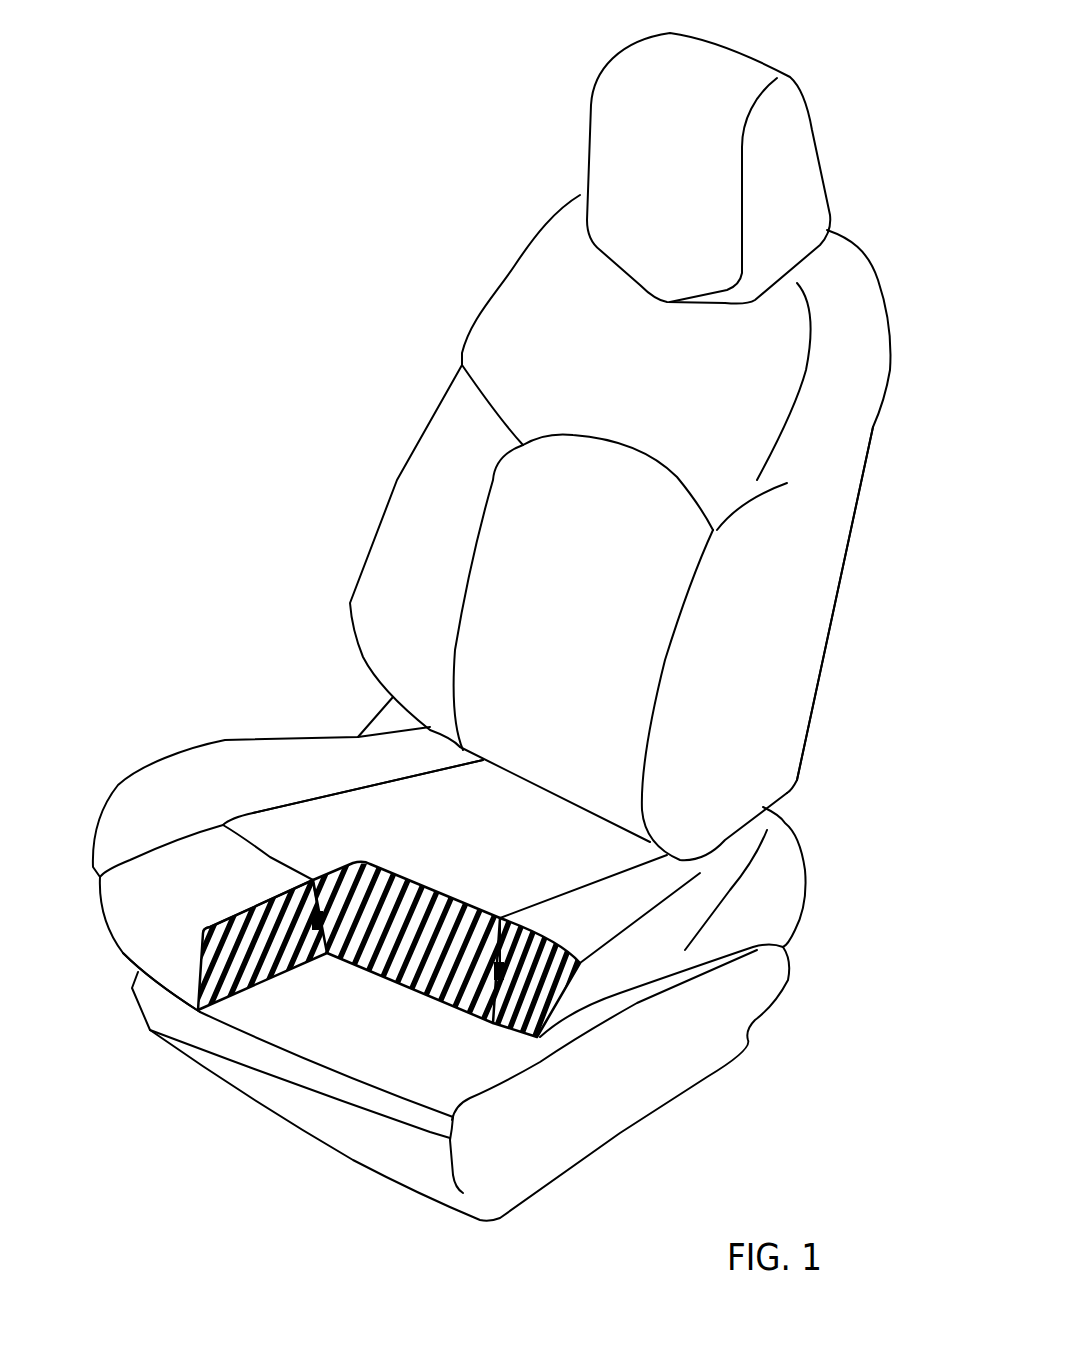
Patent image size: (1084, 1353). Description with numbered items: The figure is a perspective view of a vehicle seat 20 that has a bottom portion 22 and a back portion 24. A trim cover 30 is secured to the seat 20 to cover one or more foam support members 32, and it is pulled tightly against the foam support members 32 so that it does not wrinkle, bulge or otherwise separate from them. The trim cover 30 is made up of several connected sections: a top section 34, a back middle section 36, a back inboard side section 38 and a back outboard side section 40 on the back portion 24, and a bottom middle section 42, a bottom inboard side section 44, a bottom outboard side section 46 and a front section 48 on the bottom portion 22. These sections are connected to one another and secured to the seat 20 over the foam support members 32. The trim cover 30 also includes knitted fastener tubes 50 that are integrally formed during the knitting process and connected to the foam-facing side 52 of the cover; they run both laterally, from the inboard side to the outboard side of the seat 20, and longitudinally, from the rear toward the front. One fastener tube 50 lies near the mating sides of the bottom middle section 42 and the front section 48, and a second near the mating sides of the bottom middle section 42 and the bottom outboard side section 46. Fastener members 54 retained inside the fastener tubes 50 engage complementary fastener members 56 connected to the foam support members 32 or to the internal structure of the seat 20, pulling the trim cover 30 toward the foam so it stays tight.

The vehicle seat 20 is at (360, 273).
The bottom portion 22 is at (557, 858).
The back portion 24 is at (825, 565).
The trim cover 30 is at (185, 858).
The foam support members 32 is at (432, 913).
The top section 34 is at (747, 403).
The back middle section 36 is at (530, 543).
The back inboard side section 38 is at (450, 425).
The back outboard side section 40 is at (740, 737).
The bottom middle section 42 is at (355, 823).
The bottom inboard side section 44 is at (227, 747).
The bottom outboard side section 46 is at (620, 972).
The front section 48 is at (145, 953).
The knitted fastener tubes 50 is at (313, 915).
The foam-facing side 52 is at (227, 925).
The fastener members 54 is at (317, 910).
The complementary fastener members 56 is at (327, 953).